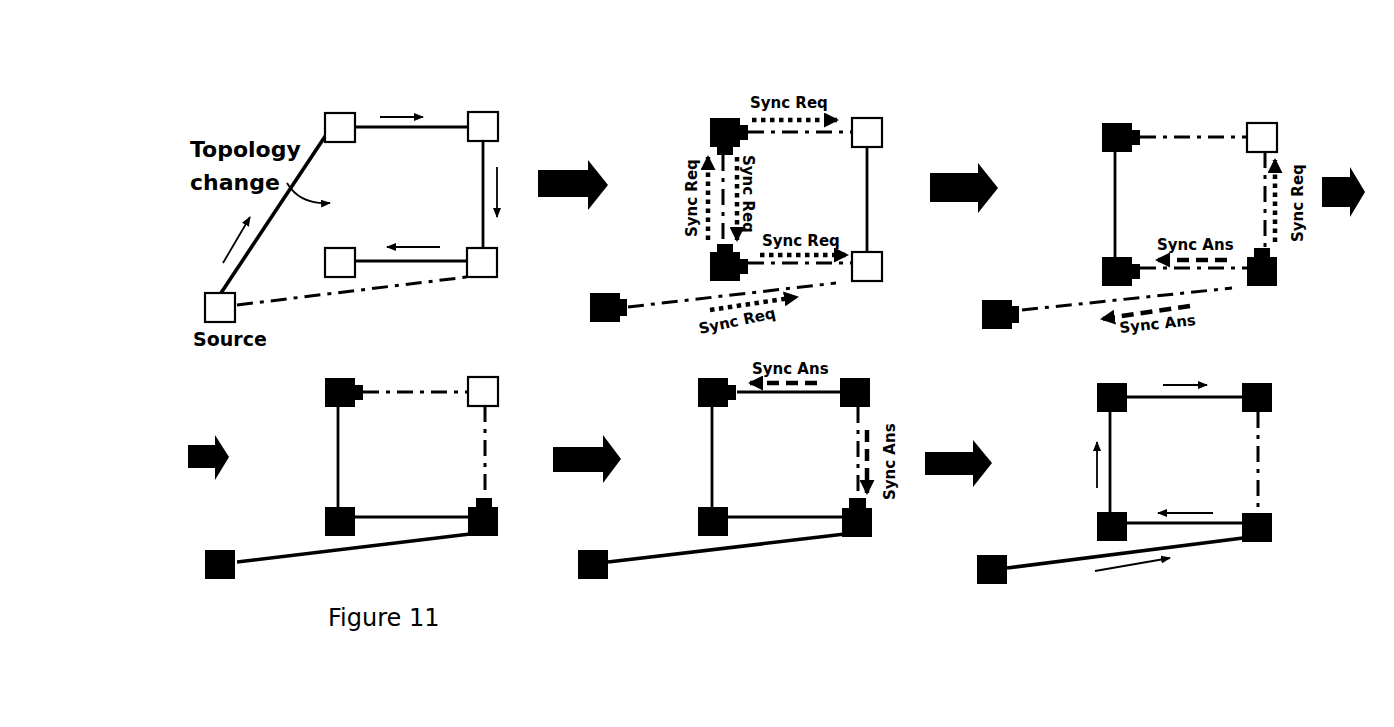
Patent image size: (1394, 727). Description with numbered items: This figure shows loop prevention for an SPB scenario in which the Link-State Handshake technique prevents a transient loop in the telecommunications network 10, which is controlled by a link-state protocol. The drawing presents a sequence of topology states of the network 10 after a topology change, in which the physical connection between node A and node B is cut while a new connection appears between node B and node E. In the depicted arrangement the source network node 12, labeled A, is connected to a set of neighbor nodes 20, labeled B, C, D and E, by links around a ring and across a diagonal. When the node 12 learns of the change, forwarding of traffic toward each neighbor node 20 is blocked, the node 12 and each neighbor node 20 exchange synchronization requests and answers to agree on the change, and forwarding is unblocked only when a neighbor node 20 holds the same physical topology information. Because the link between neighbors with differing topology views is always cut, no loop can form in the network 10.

The telecommunications network 10 is at (352, 216).
The network node 12 is at (205, 296).
The neighbor node 20 is at (345, 113).